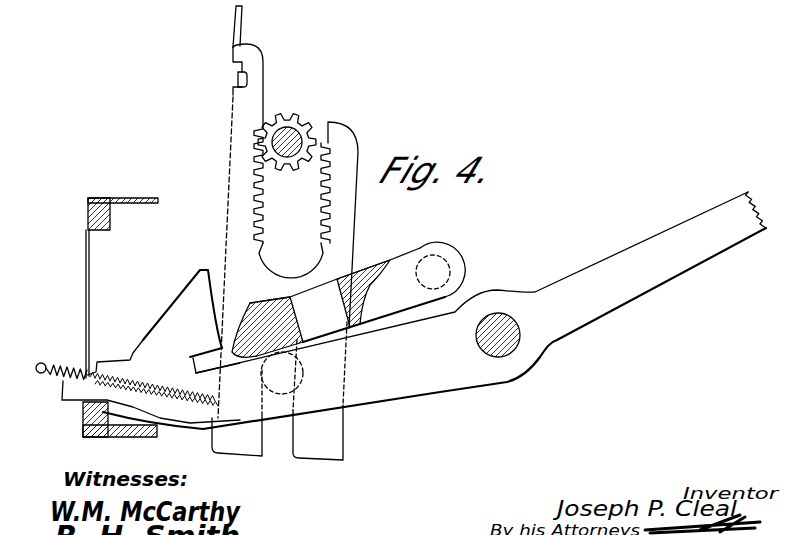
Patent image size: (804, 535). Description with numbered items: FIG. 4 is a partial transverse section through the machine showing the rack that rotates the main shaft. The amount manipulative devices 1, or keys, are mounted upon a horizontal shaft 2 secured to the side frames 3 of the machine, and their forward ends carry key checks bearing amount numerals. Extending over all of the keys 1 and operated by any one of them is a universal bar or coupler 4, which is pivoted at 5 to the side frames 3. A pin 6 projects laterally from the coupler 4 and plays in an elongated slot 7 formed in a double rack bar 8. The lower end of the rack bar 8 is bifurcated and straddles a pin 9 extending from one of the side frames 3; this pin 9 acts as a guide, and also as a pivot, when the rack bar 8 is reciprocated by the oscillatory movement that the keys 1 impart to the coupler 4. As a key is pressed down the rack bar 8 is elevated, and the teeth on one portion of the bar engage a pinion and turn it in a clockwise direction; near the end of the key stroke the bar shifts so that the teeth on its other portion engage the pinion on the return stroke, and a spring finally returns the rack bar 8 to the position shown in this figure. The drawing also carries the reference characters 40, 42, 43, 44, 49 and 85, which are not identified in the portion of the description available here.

The amount manipulative devices 1 is at (279, 252).
The horizontal shaft 2 is at (477, 344).
The side frames 3 is at (590, 274).
The universal bar or coupler 4 is at (393, 242).
The pivot 5 is at (508, 238).
The pin 6 is at (459, 0).
The elongated slot 7 is at (421, 0).
The double rack bar 8 is at (230, 202).
The pin 9 is at (295, 396).
The rack 40 is at (300, 200).
The rod 42 is at (237, 22).
The spring 43 is at (87, 366).
The pin 44 is at (232, 80).
The pinion gear 49 is at (293, 134).
The member 85 is at (345, 0).